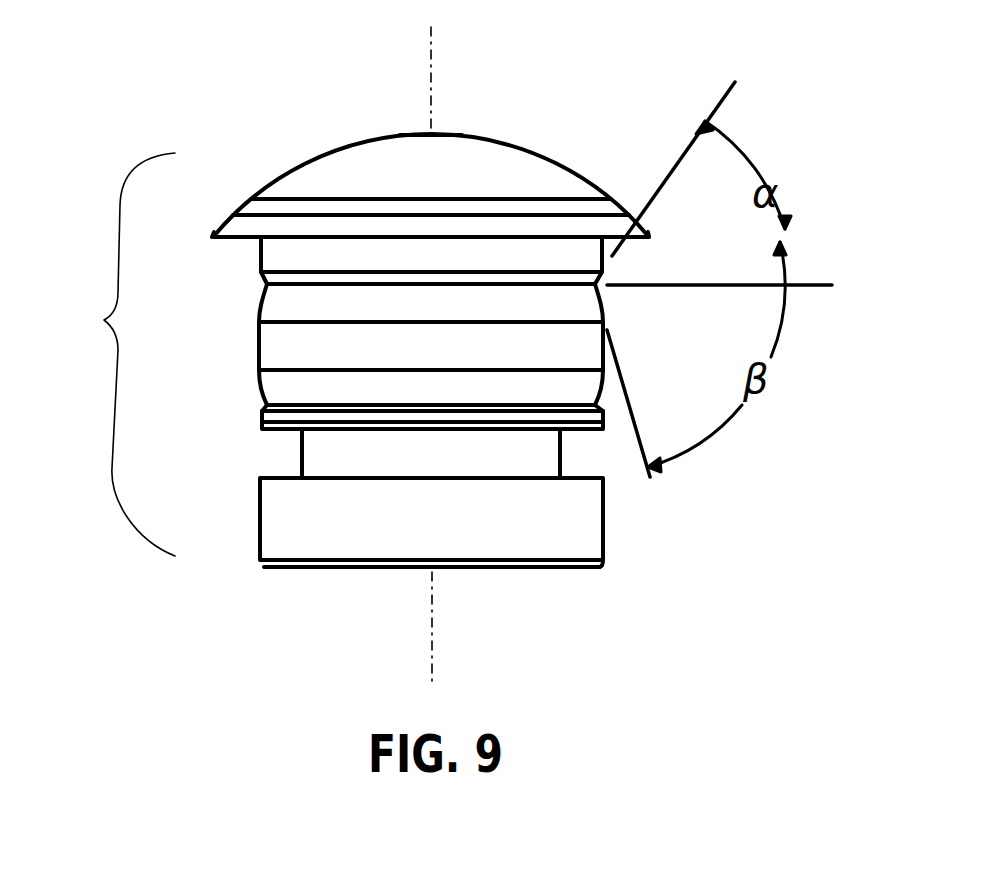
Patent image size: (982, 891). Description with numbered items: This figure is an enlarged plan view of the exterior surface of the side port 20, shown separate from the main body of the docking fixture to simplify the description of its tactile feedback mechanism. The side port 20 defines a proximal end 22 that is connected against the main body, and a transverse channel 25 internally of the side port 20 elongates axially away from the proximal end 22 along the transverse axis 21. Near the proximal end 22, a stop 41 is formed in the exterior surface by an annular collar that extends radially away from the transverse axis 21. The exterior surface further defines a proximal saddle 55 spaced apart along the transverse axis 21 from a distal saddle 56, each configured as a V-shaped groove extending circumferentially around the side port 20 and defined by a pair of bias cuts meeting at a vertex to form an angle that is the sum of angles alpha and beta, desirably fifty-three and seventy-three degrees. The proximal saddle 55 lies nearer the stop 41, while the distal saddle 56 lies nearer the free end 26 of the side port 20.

The side port 20 is at (101, 354).
The transverse axis 21 is at (440, 34).
The proximal end 22 is at (293, 164).
The transverse channel 25 is at (448, 134).
The stop 41 is at (230, 243).
The proximal saddle 55 is at (262, 287).
The distal saddle 56 is at (252, 386).
The free end 26 is at (598, 563).